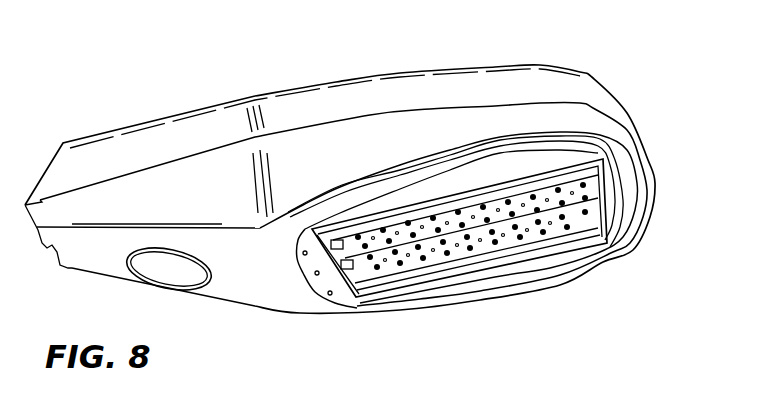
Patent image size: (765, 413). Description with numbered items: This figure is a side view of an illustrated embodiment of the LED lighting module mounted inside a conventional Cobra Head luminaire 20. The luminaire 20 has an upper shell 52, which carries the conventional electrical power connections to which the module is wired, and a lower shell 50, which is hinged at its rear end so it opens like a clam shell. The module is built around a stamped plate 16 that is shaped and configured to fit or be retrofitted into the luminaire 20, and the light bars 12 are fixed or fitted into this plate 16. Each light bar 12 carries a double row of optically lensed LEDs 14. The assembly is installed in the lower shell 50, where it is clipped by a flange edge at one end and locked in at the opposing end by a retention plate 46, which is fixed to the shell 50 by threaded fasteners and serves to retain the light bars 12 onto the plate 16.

The luminaire 20 is at (157, 81).
The upper shell 52 is at (380, 88).
The lower shell 50 is at (238, 280).
The retention plate 46 is at (320, 287).
The stamped plate 16 is at (488, 265).
The LEDs 14 is at (425, 258).
The light bars 12 is at (550, 224).